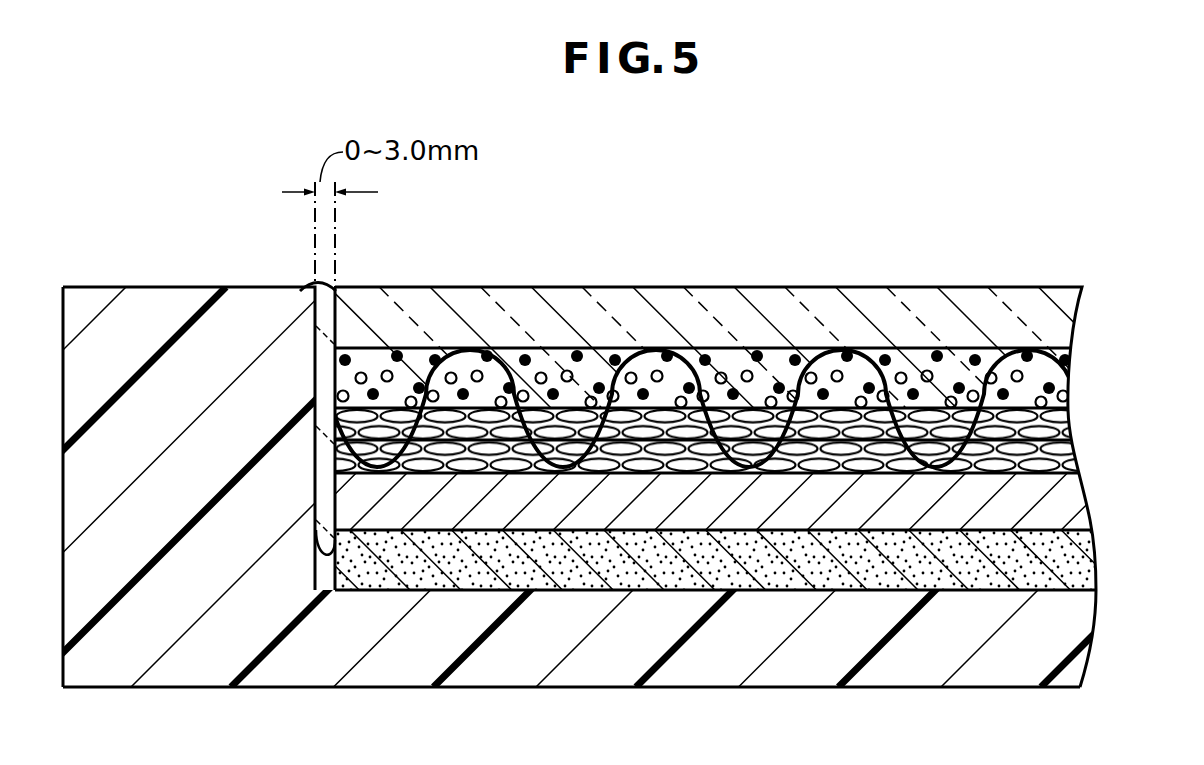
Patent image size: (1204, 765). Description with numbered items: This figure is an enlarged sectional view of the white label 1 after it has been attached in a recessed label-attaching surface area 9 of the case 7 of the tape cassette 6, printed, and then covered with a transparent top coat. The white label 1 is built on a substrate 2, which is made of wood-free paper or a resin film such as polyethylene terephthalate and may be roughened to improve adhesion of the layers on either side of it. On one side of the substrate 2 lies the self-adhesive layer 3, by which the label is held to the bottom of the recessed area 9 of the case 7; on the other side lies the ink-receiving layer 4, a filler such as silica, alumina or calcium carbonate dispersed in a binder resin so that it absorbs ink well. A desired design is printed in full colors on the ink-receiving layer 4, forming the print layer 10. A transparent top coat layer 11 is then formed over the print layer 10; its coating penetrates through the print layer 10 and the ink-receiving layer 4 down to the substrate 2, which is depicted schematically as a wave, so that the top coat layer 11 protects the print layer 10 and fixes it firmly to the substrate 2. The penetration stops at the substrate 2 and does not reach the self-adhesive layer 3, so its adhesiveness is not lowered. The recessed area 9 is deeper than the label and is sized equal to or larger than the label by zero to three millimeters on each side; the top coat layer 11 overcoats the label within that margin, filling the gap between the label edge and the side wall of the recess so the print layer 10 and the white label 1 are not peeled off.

The white label 1 is at (1165, 422).
The substrate 2 is at (1063, 506).
The self-adhesive layer 3 is at (1070, 564).
The ink-receiving layer 4 is at (1055, 452).
The tape cassette 6 is at (107, 287).
The case 7 is at (173, 287).
The label-attaching surface area 9 is at (925, 597).
The print layer 10 is at (737, 368).
The transparent top coat layer 11 is at (826, 303).